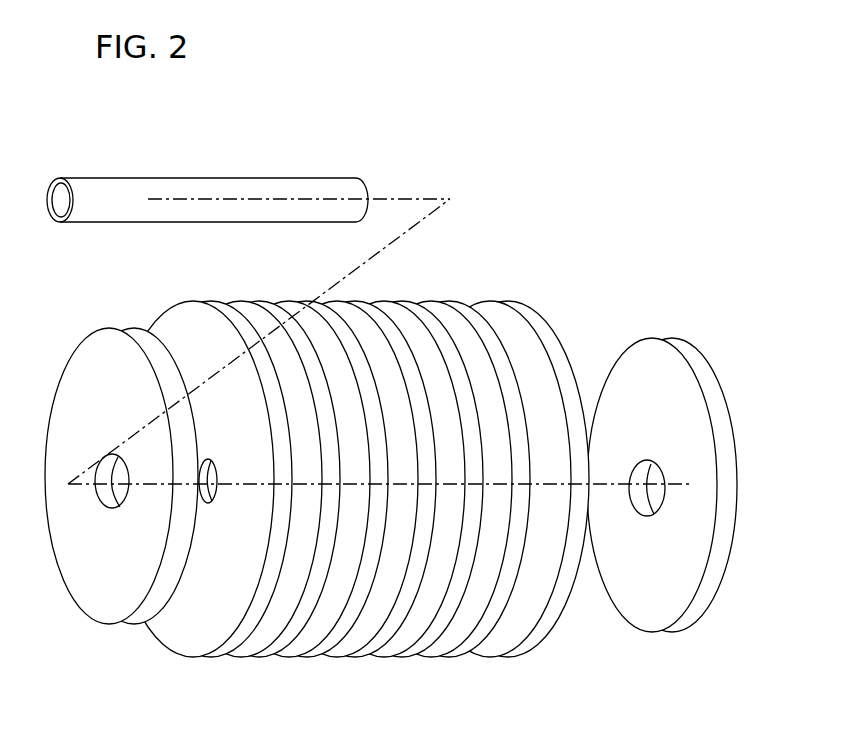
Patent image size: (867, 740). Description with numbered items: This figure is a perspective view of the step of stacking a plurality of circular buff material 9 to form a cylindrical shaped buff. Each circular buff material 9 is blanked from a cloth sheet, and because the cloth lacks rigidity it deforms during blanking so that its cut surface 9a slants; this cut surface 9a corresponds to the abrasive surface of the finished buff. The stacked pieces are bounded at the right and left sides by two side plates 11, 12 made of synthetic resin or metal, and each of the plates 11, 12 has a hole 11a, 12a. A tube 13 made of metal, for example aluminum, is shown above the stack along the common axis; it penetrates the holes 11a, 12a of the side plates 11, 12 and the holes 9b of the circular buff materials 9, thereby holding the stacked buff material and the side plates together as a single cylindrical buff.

The circular buff material 9 is at (357, 447).
The cut surface 9a is at (518, 308).
The hole 9b is at (203, 500).
The side plate 11 is at (100, 343).
The hole 11a is at (113, 500).
The side plate 12 is at (690, 340).
The hole 12a is at (652, 517).
The tube 13 is at (177, 175).